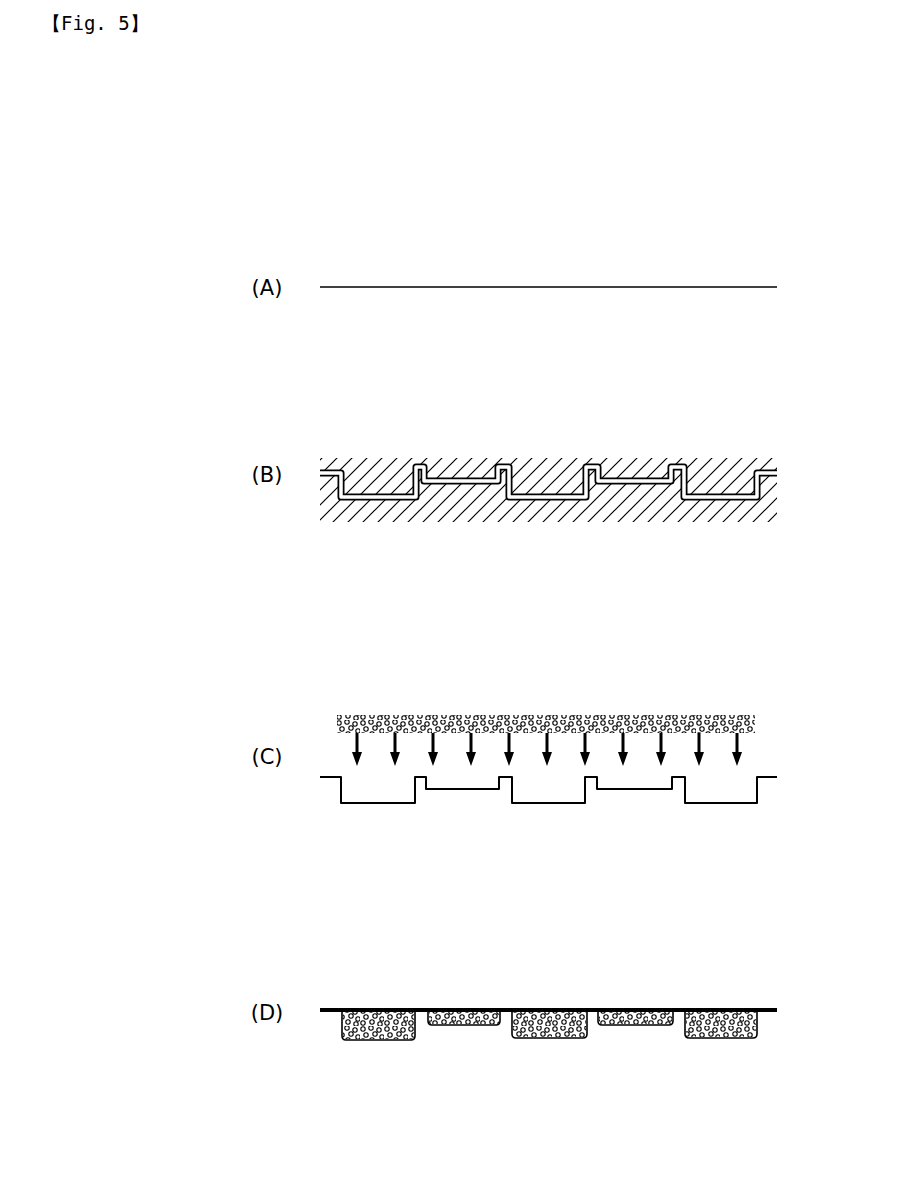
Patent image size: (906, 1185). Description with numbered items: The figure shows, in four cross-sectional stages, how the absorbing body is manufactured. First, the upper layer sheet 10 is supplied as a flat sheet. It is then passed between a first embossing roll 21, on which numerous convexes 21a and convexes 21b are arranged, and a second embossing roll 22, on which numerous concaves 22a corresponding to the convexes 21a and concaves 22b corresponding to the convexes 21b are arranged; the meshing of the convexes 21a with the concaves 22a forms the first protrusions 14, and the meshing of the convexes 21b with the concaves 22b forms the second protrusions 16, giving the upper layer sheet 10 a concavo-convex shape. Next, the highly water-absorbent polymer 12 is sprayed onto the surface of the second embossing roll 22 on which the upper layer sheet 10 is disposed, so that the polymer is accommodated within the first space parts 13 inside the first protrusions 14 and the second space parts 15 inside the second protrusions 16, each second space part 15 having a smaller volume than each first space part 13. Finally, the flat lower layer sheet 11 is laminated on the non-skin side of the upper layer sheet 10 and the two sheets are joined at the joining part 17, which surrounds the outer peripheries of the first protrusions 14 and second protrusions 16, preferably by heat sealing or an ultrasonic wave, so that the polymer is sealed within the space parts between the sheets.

The upper layer sheet 10 is at (553, 287).
The lower layer sheet 11 is at (543, 1006).
The highly water-absorbent polymer 12 is at (548, 717).
The first space part 13 is at (383, 790).
The first protrusion 14 is at (528, 806).
The second space part 15 is at (440, 780).
The second protrusion 16 is at (472, 790).
The joining part 17 is at (503, 1006).
The first embossing roll 21 is at (545, 465).
The convex 21a is at (567, 487).
The convex 21b is at (465, 475).
The second embossing roll 22 is at (550, 514).
The concave 22a is at (584, 505).
The concave 22b is at (462, 492).